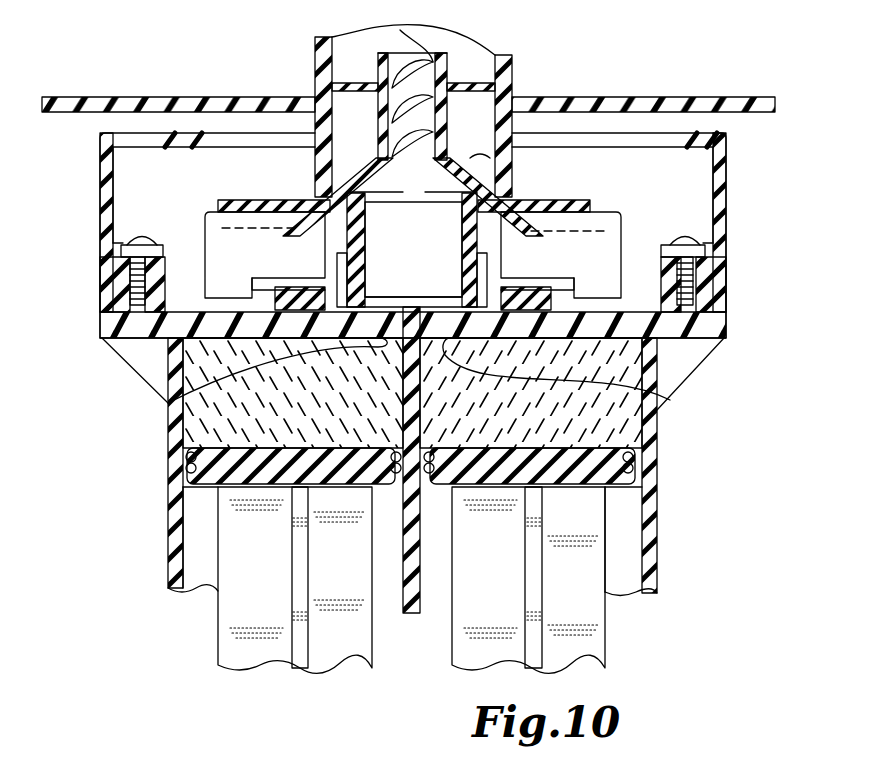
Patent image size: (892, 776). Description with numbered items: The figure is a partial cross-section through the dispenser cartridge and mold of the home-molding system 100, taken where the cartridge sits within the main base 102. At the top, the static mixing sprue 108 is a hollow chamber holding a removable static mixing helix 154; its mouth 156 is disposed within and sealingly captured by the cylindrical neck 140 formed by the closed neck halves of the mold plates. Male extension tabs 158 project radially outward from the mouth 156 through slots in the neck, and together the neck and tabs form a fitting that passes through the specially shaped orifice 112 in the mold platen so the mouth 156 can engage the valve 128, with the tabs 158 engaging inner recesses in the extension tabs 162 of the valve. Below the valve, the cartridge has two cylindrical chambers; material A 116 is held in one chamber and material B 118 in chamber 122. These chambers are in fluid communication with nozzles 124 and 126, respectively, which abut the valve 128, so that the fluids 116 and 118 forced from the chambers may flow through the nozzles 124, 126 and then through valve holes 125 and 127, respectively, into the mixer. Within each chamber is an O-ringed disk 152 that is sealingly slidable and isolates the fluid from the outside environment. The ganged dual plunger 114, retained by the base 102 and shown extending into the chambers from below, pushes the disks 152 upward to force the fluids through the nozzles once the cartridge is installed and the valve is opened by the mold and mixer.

The home-molding system 100 is at (658, 73).
The main base 102 is at (660, 105).
The static mixing sprue 108 is at (440, 64).
The specially shaped orifice 112 is at (223, 97).
The ganged dual plunger 114 is at (265, 558).
The material A 116 is at (556, 419).
The material B 118 is at (305, 414).
The chamber 122 is at (170, 450).
The nozzle 124 is at (668, 399).
The valve hole 125 is at (442, 295).
The nozzle 126 is at (168, 403).
The valve hole 127 is at (390, 296).
The valve 128 is at (322, 262).
The cylindrical neck 140 is at (512, 66).
The O-ringed disk 152 is at (217, 485).
The static mixing helix 154 is at (405, 38).
The mouth 156 is at (473, 157).
The male extension tabs 158 is at (277, 202).
The extension tabs 162 is at (290, 247).